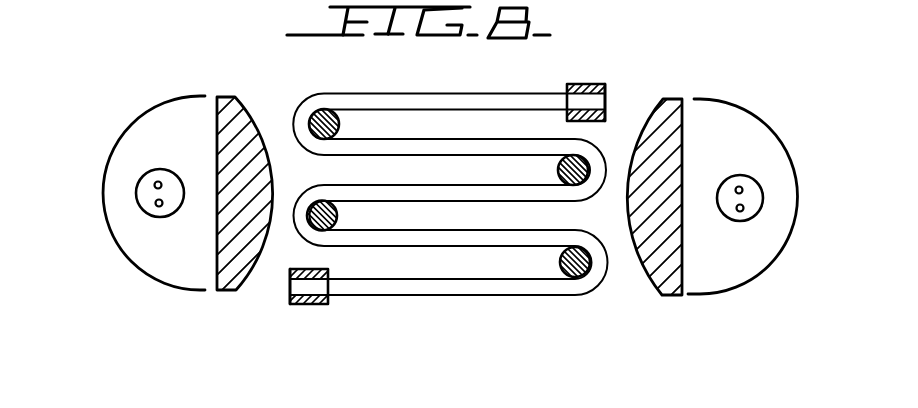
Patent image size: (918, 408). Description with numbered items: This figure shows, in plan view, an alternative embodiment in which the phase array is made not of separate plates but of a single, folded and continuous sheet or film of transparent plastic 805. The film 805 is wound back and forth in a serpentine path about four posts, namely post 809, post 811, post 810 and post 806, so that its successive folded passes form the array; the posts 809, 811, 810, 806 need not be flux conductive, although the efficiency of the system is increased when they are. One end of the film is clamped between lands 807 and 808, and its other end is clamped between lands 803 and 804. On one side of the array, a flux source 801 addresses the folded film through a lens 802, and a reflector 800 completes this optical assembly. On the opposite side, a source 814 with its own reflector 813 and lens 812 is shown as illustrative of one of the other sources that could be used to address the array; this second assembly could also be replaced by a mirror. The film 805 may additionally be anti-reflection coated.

The reflector 800 is at (133, 268).
The flux source 801 is at (134, 197).
The lens 802 is at (233, 293).
The land 803 is at (290, 272).
The land 804 is at (305, 304).
The film 805 is at (470, 83).
The post 806 is at (557, 269).
The land 807 is at (612, 66).
The land 808 is at (605, 117).
The post 809 is at (323, 109).
The post 810 is at (338, 214).
The post 811 is at (557, 175).
The lens 812 is at (663, 296).
The reflector 813 is at (797, 226).
The source 814 is at (752, 186).